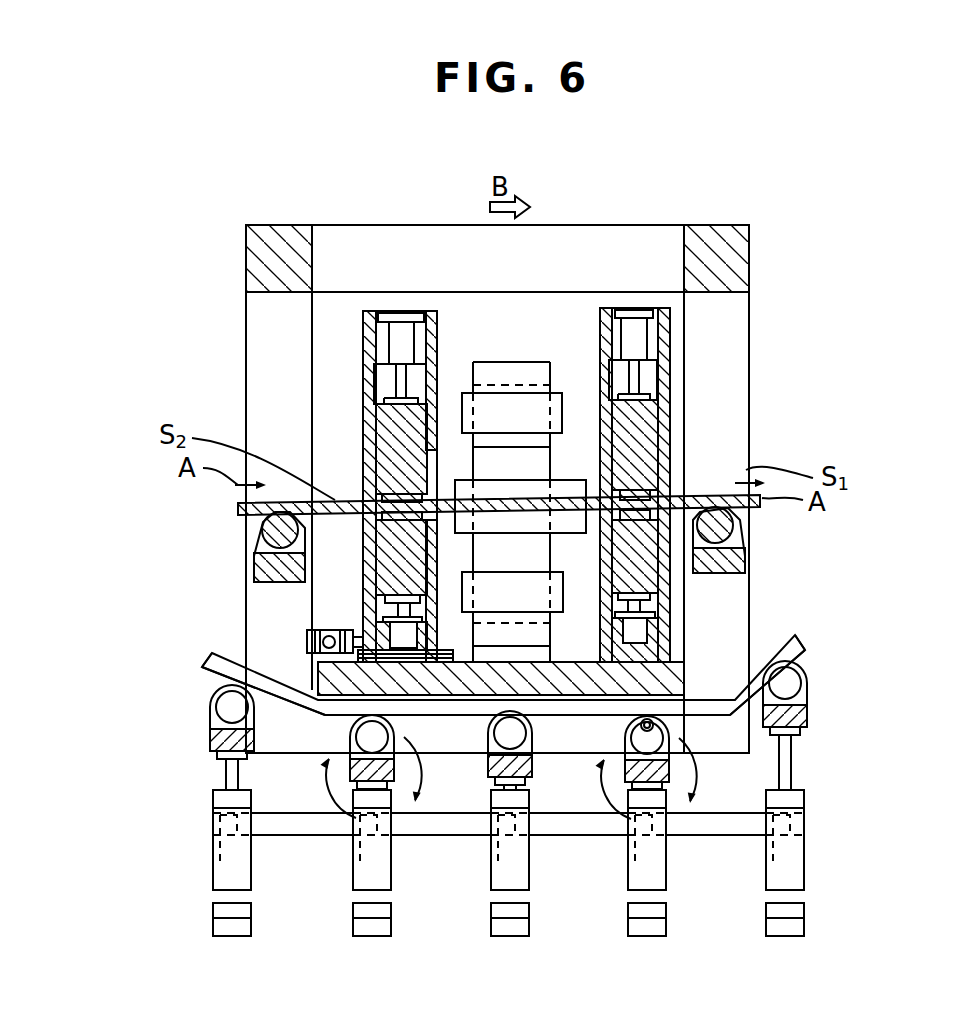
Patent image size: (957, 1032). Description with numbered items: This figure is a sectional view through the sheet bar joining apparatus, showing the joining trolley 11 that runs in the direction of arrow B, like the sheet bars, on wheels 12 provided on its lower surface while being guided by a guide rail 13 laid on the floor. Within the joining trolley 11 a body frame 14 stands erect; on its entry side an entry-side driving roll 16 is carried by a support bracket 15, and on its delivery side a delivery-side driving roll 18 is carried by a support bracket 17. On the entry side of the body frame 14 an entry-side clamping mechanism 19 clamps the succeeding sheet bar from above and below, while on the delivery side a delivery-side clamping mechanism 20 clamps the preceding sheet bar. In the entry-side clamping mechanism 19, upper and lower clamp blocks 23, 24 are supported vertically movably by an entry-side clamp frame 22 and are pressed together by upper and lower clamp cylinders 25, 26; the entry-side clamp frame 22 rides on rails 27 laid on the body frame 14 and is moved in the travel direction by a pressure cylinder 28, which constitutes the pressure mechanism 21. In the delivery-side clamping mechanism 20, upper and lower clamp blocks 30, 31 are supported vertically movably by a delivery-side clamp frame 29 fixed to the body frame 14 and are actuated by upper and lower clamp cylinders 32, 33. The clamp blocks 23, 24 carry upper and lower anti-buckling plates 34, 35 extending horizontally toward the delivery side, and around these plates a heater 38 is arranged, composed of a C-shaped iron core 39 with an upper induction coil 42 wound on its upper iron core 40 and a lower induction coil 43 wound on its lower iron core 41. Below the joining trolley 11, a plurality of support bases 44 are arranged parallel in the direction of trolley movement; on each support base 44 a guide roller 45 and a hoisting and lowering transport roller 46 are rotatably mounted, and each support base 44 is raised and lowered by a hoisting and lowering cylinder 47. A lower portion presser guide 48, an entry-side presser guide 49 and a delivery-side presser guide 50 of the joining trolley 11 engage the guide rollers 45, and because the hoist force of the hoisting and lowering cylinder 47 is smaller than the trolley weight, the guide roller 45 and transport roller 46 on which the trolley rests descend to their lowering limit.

The joining trolley 11 is at (686, 222).
The wheels 12 is at (316, 836).
The guide rail 13 is at (735, 836).
The body frame 14 is at (578, 236).
The support bracket 15 is at (266, 526).
The entry-side driving roll 16 is at (262, 508).
The support bracket 17 is at (742, 558).
The delivery-side driving roll 18 is at (724, 520).
The entry-side clamping mechanism 19 is at (383, 306).
The delivery-side clamping mechanism 20 is at (657, 303).
The pressure mechanism 21 is at (322, 624).
The entry-side clamp frame 22 is at (400, 440).
The upper clamp block 23 is at (408, 418).
The lower clamp block 24 is at (300, 567).
The upper clamp cylinder 25 is at (376, 328).
The lower clamp cylinder 26 is at (392, 600).
The rails 27 is at (230, 690).
The pressure cylinder 28 is at (300, 697).
The delivery-side clamp frame 29 is at (666, 350).
The upper clamp block 30 is at (651, 422).
The lower clamp block 31 is at (652, 624).
The upper clamp cylinder 32 is at (634, 332).
The lower clamp cylinder 33 is at (690, 690).
The upper anti-buckling plate 34 is at (560, 474).
The lower anti-buckling plate 35 is at (562, 600).
The heater 38 is at (498, 358).
The C-shaped iron core 39 is at (462, 462).
The upper iron core 40 is at (547, 391).
The lower iron core 41 is at (806, 642).
The upper induction coil 42 is at (556, 404).
The lower induction coil 43 is at (645, 645).
The support base 44 is at (210, 742).
The guide roller 45 is at (214, 705).
The hoisting and lowering transport roller 46 is at (246, 708).
The hoisting and lowering cylinder 47 is at (213, 862).
The lower portion presser guide 48 is at (461, 712).
The entry-side presser guide 49 is at (210, 667).
The delivery-side presser guide 50 is at (782, 660).